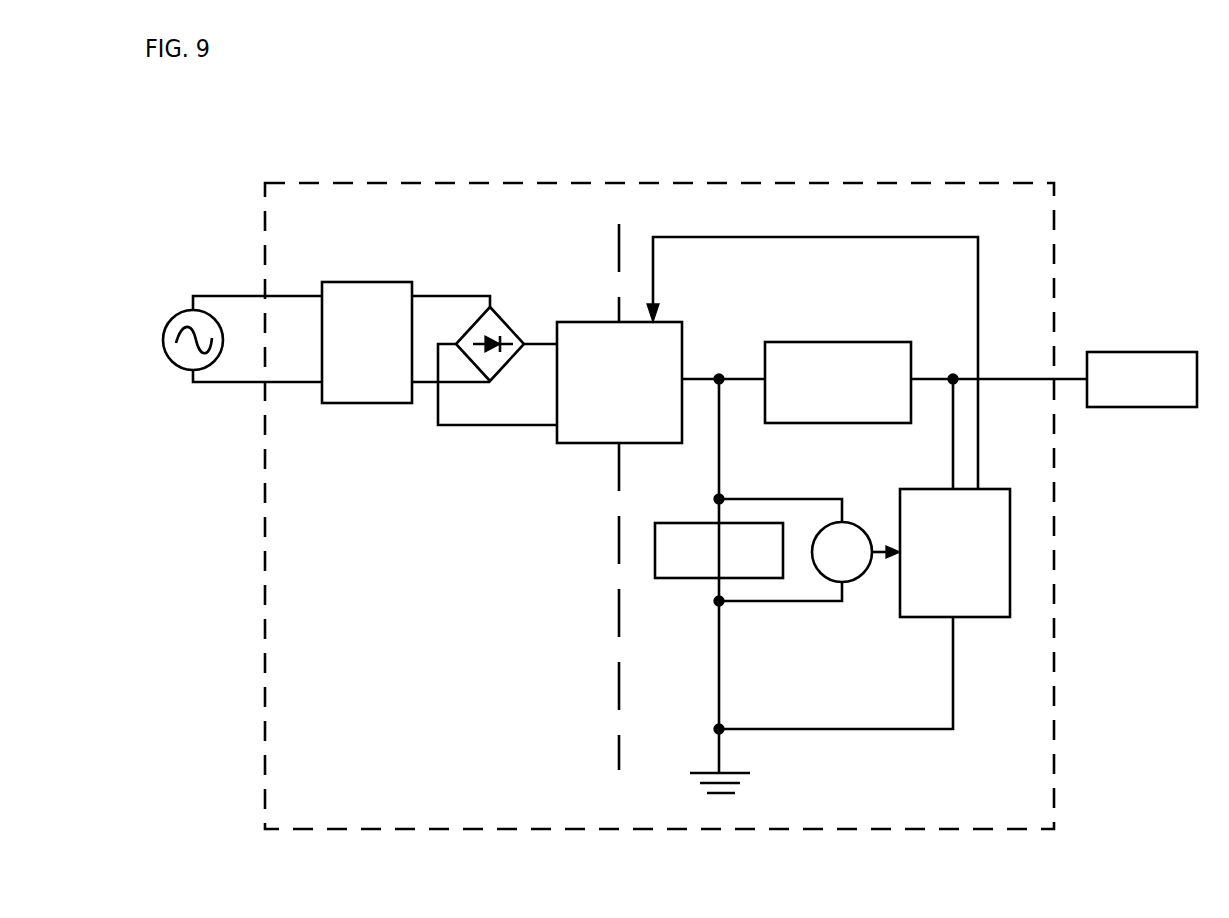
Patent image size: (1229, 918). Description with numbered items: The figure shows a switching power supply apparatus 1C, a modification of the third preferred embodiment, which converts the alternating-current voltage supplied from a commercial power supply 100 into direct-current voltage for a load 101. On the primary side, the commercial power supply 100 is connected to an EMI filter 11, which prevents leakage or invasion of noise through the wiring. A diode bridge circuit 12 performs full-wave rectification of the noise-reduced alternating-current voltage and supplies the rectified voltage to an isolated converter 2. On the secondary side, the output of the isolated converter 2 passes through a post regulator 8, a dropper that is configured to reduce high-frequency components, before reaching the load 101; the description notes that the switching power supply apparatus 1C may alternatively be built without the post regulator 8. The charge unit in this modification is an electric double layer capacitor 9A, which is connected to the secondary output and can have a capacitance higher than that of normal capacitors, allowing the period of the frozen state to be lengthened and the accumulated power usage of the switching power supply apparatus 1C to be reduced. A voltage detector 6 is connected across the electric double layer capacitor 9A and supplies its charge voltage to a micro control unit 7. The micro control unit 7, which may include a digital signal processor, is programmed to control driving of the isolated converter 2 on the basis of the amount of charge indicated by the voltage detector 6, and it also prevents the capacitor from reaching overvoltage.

The switching power supply apparatus 1C is at (285, 182).
The commercial power supply 100 is at (173, 315).
The EMI filter 11 is at (343, 282).
The diode bridge circuit 12 is at (493, 313).
The isolated converter 2 is at (557, 443).
The post regulator 8 is at (883, 342).
The load 101 is at (1187, 352).
The micro control unit (MCU) 7 is at (1012, 530).
The electric double layer capacitor 9A is at (680, 580).
The voltage detector 6 is at (852, 583).